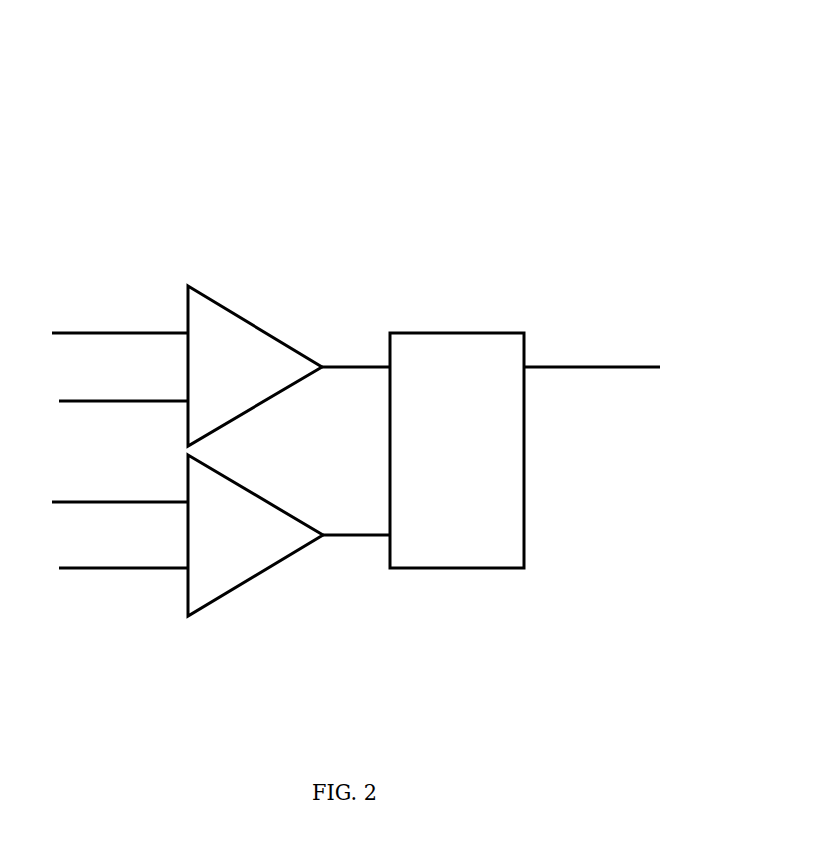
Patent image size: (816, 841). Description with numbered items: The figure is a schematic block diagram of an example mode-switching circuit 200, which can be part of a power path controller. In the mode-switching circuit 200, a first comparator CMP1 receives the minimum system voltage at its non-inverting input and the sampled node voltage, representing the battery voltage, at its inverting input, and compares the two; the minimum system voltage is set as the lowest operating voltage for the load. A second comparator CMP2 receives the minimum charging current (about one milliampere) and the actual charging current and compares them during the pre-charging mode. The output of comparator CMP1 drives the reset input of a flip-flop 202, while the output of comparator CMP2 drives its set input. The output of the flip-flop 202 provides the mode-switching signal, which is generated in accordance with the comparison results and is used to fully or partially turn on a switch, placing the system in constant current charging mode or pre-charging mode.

The mode-switching circuit 200 is at (625, 62).
The flip-flop 202 is at (457, 450).
The comparator CMP1 is at (221, 366).
The comparator CMP2 is at (221, 535).